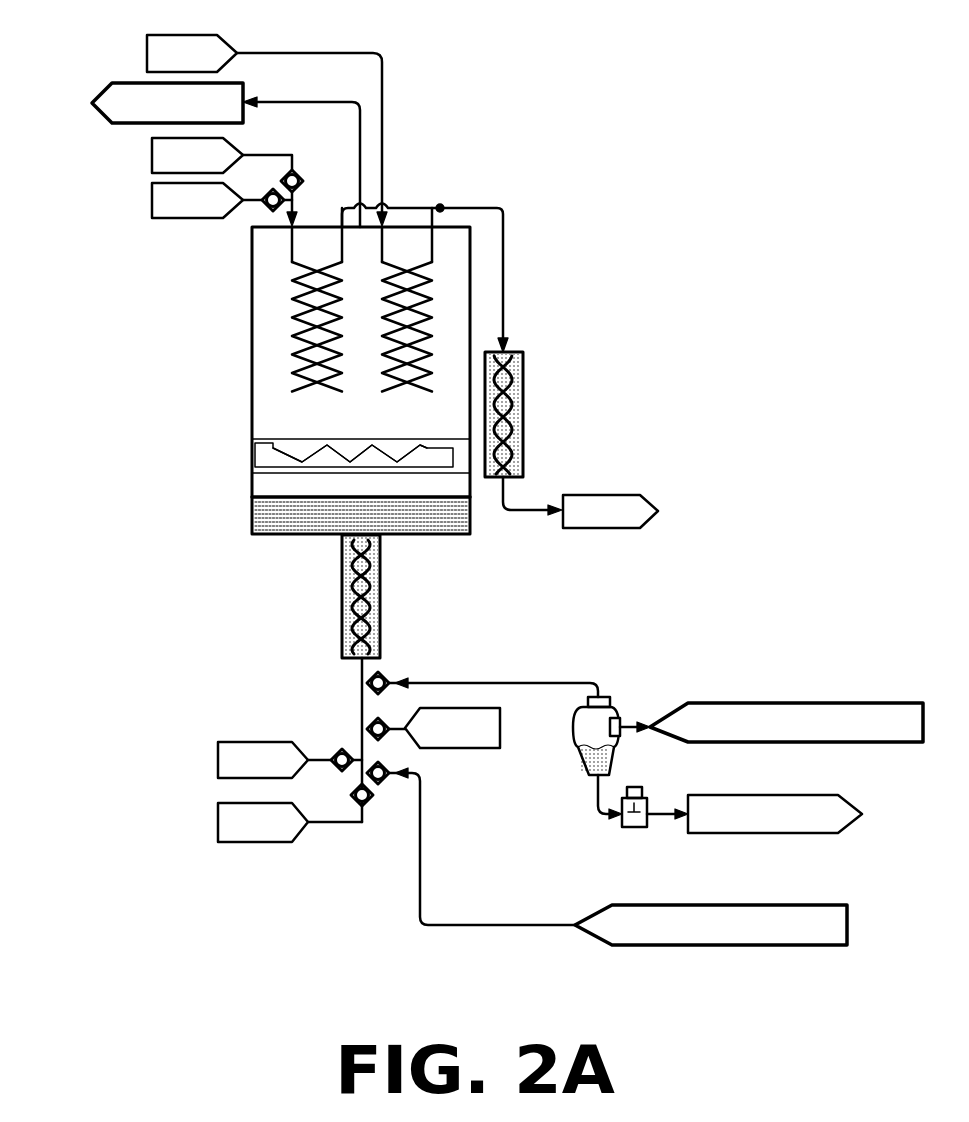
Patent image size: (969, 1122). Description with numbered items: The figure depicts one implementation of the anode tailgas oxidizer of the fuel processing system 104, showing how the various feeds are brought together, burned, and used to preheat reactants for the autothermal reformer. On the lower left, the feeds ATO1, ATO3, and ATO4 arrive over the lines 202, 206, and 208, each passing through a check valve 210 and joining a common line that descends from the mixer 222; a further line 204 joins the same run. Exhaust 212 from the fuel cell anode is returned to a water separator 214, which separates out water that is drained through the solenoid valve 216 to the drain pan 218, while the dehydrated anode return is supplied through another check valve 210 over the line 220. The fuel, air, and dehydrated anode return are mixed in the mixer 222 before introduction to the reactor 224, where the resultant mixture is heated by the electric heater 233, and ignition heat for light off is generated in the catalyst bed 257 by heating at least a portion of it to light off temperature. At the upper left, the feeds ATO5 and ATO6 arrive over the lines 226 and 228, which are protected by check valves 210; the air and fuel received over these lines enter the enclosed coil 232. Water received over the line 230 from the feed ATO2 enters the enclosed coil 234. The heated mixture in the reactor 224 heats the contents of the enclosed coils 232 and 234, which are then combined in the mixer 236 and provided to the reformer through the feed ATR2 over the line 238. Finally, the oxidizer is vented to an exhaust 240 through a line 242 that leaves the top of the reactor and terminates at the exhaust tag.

The fuel processing system 104 is at (692, 124).
The line 202 is at (321, 766).
The line 204 is at (340, 823).
The line 206 is at (420, 776).
The line 208 is at (397, 720).
The check valve 210 is at (327, 164).
The exhaust 212 is at (762, 703).
The water separator 214 is at (617, 708).
The solenoid valve 216 is at (620, 828).
The drain pan 218 is at (757, 794).
The line 220 is at (556, 684).
The mixer 222 is at (383, 602).
The reactor 224 is at (250, 516).
The line 226 is at (263, 155).
The line 228 is at (258, 184).
The line 230 is at (329, 52).
The enclosed coil 232 is at (322, 393).
The electric heater 233 is at (270, 447).
The enclosed coil 234 is at (403, 393).
The mixer 236 is at (527, 348).
The line 238 is at (533, 514).
The exhaust 240 is at (98, 92).
The line 242 is at (292, 101).
The catalyst bed 257 is at (348, 447).